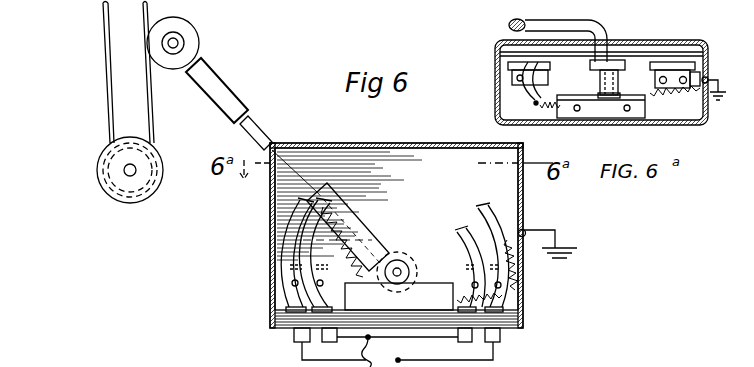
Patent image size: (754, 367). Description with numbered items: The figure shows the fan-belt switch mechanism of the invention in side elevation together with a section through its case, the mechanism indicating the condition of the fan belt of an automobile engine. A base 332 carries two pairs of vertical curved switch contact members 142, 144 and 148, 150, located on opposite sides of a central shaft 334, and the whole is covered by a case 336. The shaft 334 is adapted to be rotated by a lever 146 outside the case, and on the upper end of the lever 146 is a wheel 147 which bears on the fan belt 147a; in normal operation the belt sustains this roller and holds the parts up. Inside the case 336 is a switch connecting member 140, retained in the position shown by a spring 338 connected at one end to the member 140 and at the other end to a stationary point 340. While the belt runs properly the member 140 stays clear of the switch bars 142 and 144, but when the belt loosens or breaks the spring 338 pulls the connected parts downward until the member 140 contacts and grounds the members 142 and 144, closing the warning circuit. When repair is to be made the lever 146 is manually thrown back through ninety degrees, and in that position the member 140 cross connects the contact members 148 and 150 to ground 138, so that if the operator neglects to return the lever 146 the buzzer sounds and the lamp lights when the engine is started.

In FIG. 6, the ground connection 138 is at (540, 244).
In FIG. 6, the switch connecting member 140 is at (358, 233).
In FIG. 6, the switch contact member 142 is at (302, 221).
In FIG. 6A, the switch contact member 142 is at (524, 62).
In FIG. 6, the switch contact member 144 is at (326, 247).
In FIG. 6A, the switch contact member 144 is at (548, 62).
In FIG. 6, the lever 146 is at (228, 87).
In FIG. 6A, the lever 146 is at (509, 26).
In FIG. 6, the wheel 147 is at (168, 68).
In FIG. 6, the fan belt 147a is at (104, 90).
In FIG. 6, the switch contact member 148 is at (462, 232).
In FIG. 6A, the switch contact member 148 is at (656, 60).
In FIG. 6, the switch contact member 150 is at (488, 208).
In FIG. 6A, the switch contact member 150 is at (690, 48).
In FIG. 6, the base 332 is at (278, 324).
In FIG. 6, the central shaft 334 is at (400, 262).
In FIG. 6A, the central shaft 334 is at (604, 100).
In FIG. 6, the case 336 is at (470, 145).
In FIG. 6A, the case 336 is at (497, 62).
In FIG. 6, the spring 338 is at (360, 255).
In FIG. 6A, the spring 338 is at (550, 107).
In FIG. 6, the stationary point 340 is at (367, 284).